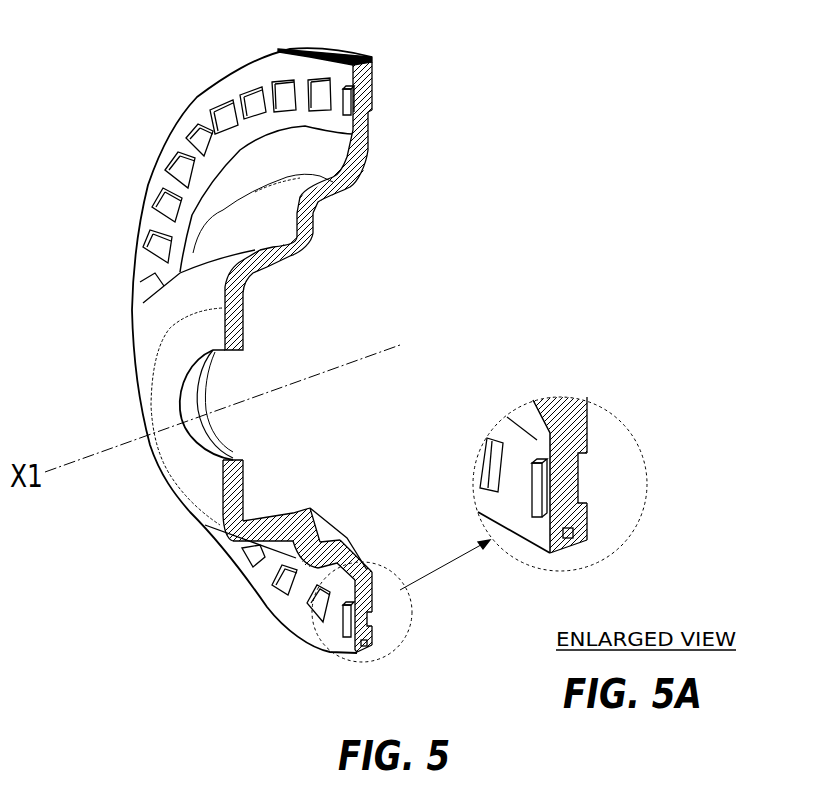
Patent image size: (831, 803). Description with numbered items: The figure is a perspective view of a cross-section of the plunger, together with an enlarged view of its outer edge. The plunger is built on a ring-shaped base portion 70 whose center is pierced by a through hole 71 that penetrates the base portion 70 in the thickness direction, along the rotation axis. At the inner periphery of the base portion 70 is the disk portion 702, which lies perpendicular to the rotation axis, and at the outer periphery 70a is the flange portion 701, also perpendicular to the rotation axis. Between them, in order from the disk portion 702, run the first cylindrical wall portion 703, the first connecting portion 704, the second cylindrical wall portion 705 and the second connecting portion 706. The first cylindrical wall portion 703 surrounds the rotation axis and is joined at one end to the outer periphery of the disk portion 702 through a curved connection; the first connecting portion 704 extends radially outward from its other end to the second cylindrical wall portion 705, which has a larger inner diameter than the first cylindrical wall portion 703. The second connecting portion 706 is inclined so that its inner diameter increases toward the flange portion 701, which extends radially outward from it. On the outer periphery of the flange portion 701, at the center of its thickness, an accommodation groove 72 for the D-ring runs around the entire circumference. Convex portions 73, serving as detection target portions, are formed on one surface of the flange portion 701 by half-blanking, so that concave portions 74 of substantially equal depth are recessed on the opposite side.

In FIG. 5, the base portion 70 is at (313, 502).
In FIG. 5, the outer periphery 70a is at (140, 197).
In FIG. 5, the through hole 71 is at (257, 395).
In FIG. 5, the accommodation groove 72 is at (360, 68).
In FIG. 5A, the accommodation groove 72 is at (567, 550).
In FIG. 5, the convex portions 73 is at (247, 93).
In FIG. 5A, the convex portions 73 is at (490, 463).
In FIG. 5, the concave portions 74 is at (371, 88).
In FIG. 5A, the concave portions 74 is at (587, 463).
In FIG. 5, the flange portion 701 is at (373, 117).
In FIG. 5A, the flange portion 701 is at (577, 480).
In FIG. 5, the disk portion 702 is at (243, 320).
In FIG. 5, the first cylindrical wall portion 703 is at (290, 260).
In FIG. 5, the first connecting portion 704 is at (310, 223).
In FIG. 5, the second cylindrical wall portion 705 is at (333, 197).
In FIG. 5, the second connecting portion 706 is at (363, 157).